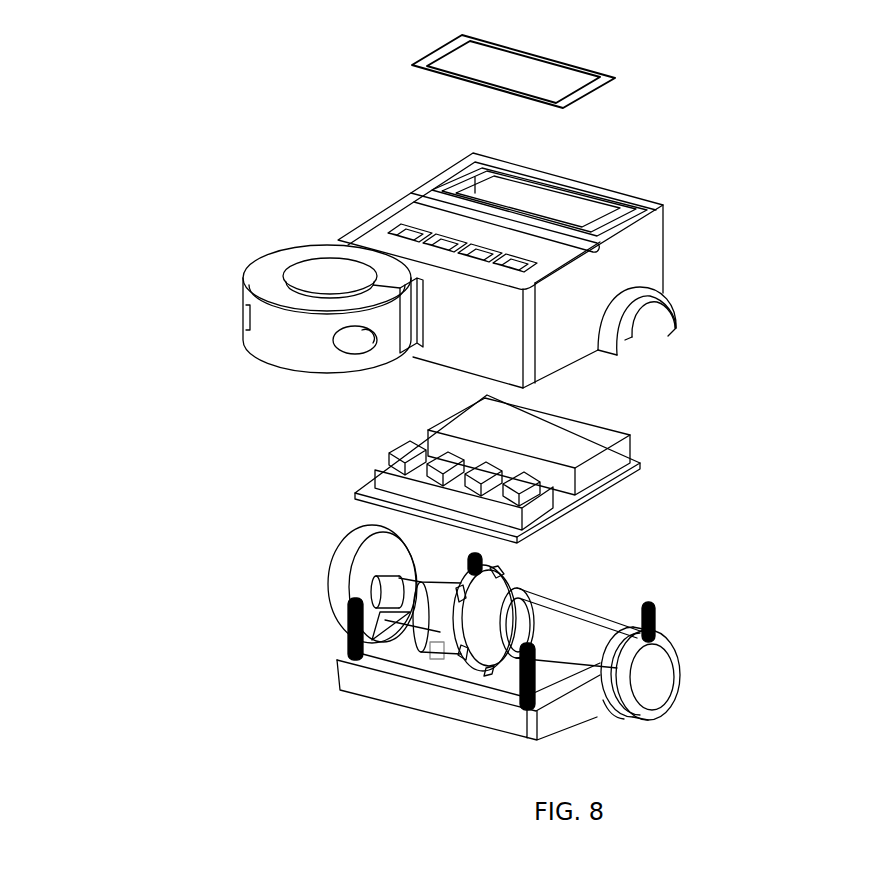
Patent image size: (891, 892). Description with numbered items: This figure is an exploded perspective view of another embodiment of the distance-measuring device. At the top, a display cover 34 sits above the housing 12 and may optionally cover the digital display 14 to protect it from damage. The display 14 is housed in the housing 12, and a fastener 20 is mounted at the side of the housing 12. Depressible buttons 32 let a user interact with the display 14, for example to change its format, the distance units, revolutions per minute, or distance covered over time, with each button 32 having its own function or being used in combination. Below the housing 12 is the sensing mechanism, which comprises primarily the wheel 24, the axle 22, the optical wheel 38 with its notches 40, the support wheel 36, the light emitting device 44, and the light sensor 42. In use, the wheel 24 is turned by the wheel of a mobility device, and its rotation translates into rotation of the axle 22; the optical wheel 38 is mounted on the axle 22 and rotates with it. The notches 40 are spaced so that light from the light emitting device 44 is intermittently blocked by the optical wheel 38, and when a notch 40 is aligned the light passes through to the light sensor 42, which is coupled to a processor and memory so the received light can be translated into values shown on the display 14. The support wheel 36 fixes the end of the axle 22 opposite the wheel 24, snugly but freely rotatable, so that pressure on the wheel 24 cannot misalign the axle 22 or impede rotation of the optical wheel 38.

The housing 12 is at (652, 248).
The display 14 is at (630, 435).
The fastener 20 is at (243, 282).
The axle 22 is at (565, 630).
The wheel 24 is at (337, 566).
The depressible buttons 32 is at (598, 487).
The display cover 34 is at (598, 93).
The support wheel 36 is at (653, 657).
The optical wheel 38 is at (512, 583).
The notches 40 is at (455, 608).
The light sensor 42 is at (632, 723).
The light emitting device 44 is at (430, 650).